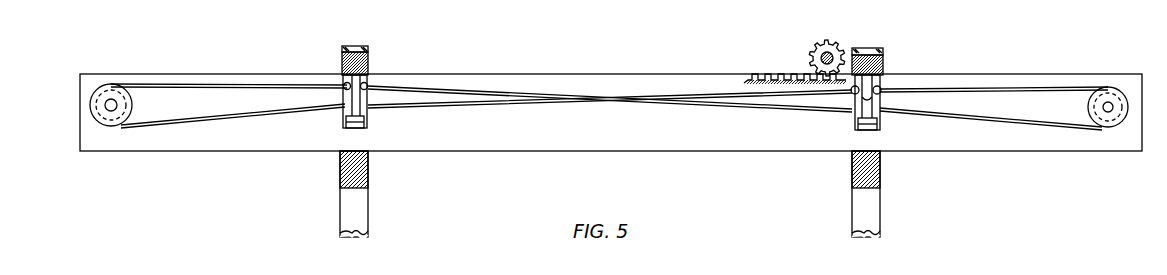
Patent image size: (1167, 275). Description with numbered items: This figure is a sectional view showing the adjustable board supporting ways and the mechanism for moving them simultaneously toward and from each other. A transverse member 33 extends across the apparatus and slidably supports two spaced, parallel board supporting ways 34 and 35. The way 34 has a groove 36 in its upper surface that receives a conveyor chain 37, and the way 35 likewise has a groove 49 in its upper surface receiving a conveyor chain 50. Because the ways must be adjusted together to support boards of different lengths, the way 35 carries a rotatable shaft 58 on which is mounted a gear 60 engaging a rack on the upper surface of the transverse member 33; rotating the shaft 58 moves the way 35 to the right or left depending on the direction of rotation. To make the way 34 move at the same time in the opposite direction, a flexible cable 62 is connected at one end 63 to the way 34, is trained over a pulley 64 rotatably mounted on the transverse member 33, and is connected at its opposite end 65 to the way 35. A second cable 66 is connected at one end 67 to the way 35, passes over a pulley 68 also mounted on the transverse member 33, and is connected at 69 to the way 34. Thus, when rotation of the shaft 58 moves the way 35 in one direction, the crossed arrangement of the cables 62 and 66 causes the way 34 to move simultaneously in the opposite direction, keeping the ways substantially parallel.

The transverse member 33 is at (491, 150).
The board supporting way 34 is at (370, 66).
The board supporting way 35 is at (883, 70).
The groove 36 is at (368, 51).
The conveyor chain 37 is at (363, 46).
The groove 49 is at (884, 52).
The conveyor chain 50 is at (871, 48).
The shaft 58 is at (809, 59).
The gear 60 is at (821, 48).
The cable 62 is at (206, 87).
The end of cable 63 is at (343, 79).
The pulley 64 is at (89, 105).
The end of cable 65 is at (880, 93).
The cable 66 is at (1042, 88).
The end of cable 67 is at (883, 91).
The pulley 68 is at (1105, 127).
The connection point 69 is at (368, 90).